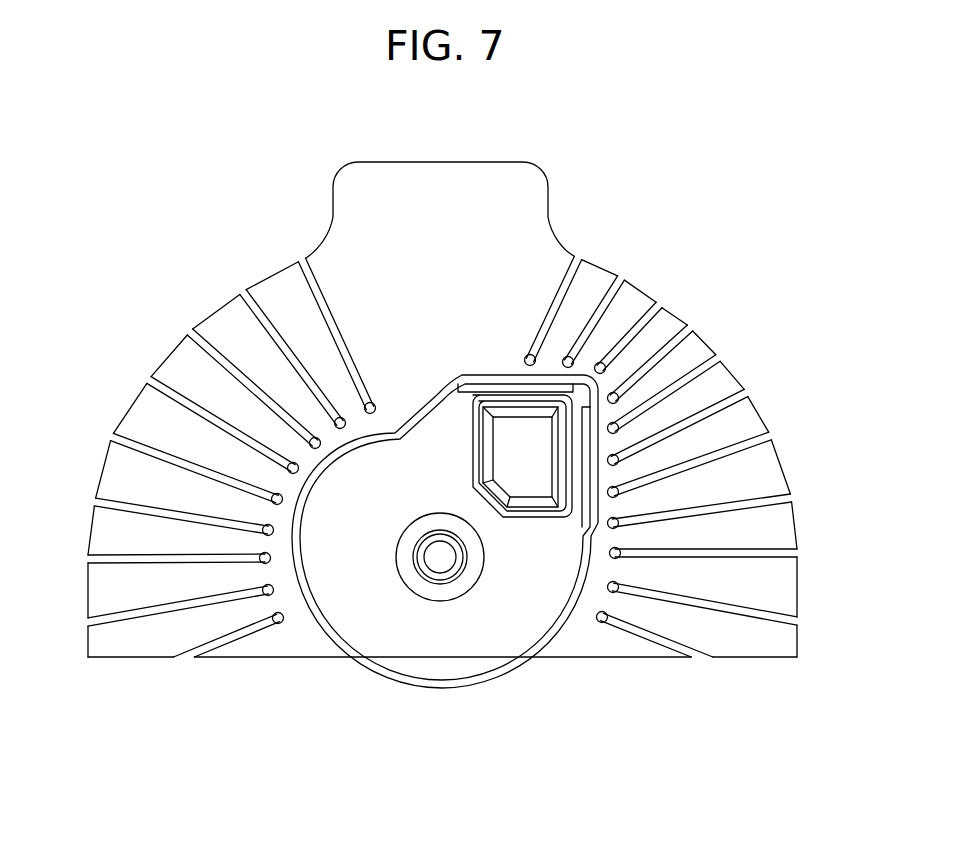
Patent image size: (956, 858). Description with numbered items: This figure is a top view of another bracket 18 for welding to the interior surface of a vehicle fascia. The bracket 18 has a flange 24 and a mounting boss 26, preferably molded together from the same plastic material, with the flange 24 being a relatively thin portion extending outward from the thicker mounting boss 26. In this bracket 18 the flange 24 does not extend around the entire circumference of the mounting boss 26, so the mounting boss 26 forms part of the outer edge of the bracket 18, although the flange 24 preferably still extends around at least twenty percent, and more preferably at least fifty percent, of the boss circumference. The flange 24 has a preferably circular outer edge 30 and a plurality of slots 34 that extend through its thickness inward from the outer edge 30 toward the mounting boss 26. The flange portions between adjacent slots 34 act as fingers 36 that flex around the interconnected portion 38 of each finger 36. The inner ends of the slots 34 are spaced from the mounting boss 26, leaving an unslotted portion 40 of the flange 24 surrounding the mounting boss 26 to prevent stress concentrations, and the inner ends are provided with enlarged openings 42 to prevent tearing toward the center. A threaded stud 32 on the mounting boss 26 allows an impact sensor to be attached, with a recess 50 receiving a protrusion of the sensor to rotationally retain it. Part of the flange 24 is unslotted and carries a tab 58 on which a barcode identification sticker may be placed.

The bracket 18 is at (157, 207).
The flange 24 is at (162, 358).
The mounting boss 26 is at (567, 632).
The outer edge 30 is at (763, 410).
The stud 32 is at (434, 601).
The slots 34 is at (267, 317).
The fingers 36 is at (663, 328).
The interconnected portion 38 is at (160, 482).
The unslotted portion 40 is at (292, 590).
The enlarged openings 42 is at (130, 524).
The recess 50 is at (525, 443).
The tab 58 is at (553, 198).